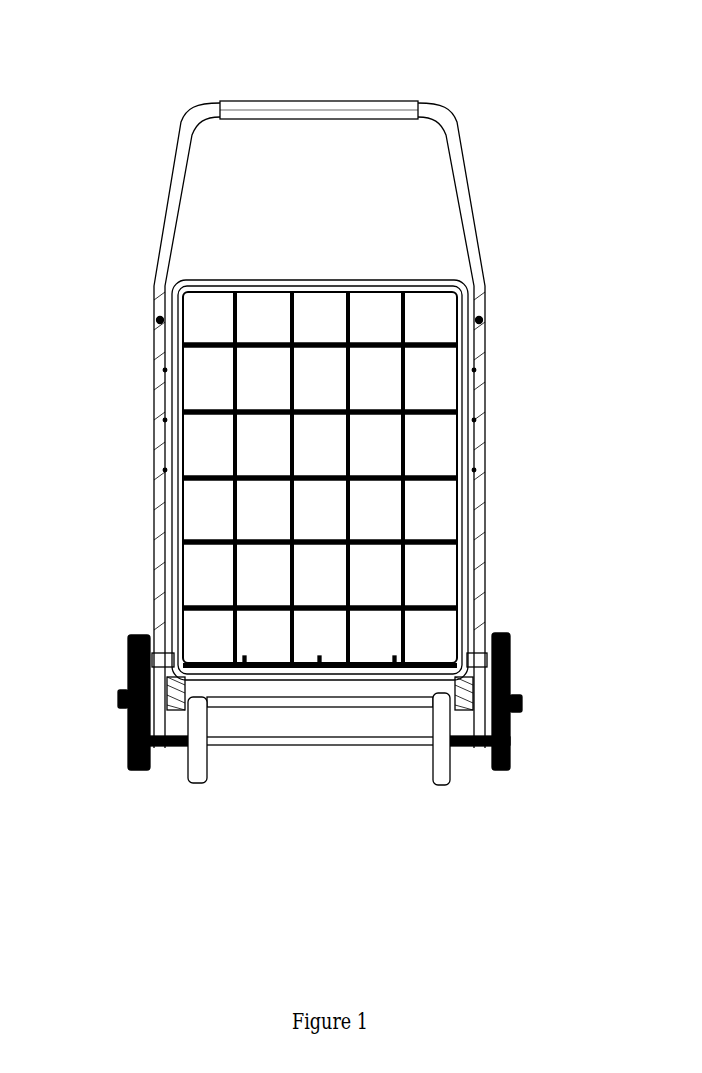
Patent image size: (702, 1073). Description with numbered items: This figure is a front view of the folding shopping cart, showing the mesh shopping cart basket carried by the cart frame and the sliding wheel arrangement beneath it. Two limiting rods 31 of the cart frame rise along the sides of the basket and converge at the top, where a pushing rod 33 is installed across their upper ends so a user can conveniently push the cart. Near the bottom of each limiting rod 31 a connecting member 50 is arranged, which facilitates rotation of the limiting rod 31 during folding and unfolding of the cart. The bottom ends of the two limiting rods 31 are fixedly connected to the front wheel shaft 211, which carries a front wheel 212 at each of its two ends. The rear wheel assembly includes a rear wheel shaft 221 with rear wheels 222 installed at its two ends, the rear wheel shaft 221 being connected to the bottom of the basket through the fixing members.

The limiting rod 31 is at (160, 290).
The pushing rod 33 is at (312, 108).
The connecting member 50 is at (148, 638).
The front wheel shaft 211 is at (318, 742).
The front wheel 212 is at (200, 762).
The rear wheel shaft 221 is at (395, 702).
The rear wheel 222 is at (500, 772).